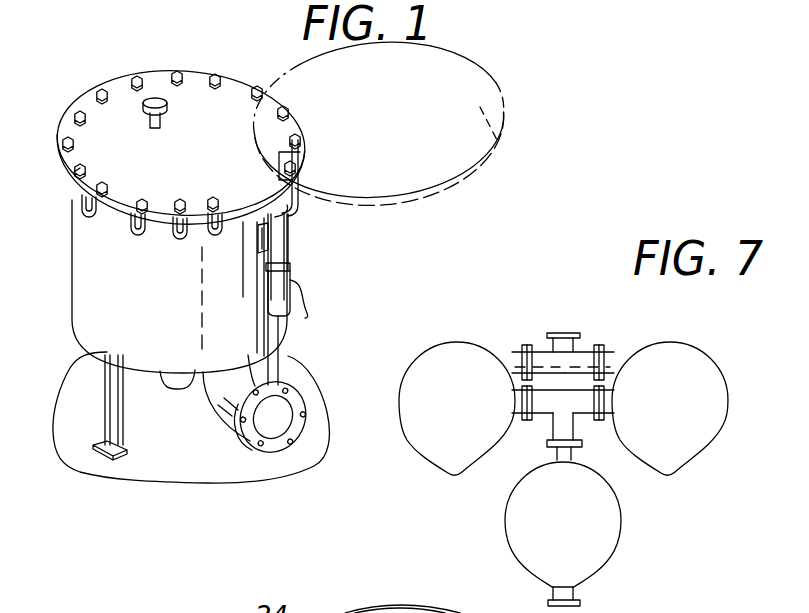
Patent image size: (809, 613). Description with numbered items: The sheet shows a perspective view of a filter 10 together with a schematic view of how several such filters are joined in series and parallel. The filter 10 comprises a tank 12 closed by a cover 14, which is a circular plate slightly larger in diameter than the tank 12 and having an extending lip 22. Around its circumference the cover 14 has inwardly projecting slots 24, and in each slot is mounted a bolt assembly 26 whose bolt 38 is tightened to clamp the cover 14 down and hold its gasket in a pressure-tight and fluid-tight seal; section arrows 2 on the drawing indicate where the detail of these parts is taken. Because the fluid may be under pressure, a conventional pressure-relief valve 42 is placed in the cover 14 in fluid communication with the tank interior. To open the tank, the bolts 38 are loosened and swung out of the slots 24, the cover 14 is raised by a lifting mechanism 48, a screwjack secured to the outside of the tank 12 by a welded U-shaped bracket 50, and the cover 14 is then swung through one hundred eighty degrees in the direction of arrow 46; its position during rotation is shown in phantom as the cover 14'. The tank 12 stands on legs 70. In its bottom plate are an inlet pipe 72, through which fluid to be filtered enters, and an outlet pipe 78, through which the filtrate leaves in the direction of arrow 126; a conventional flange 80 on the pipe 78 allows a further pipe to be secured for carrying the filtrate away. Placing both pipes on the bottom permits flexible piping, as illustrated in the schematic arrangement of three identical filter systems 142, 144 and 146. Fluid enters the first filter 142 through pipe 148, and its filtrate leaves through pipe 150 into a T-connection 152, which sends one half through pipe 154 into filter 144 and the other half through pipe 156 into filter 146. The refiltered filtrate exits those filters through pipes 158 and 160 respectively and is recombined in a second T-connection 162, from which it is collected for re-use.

In FIG. 1, the section view direction arrows 2 is at (92, 43).
In FIG. 1, the filter 10 is at (322, 316).
In FIG. 1, the tank 12 is at (188, 329).
In FIG. 1, the cover 14 is at (181, 148).
In FIG. 1, the cover during rotation 14' is at (402, 123).
In FIG. 1, the extending lip 22 is at (272, 213).
In FIG. 1, the inwardly projecting slots 24 is at (177, 71).
In FIG. 1, the bolt assembly 26 is at (180, 252).
In FIG. 1, the bolt 38 is at (88, 170).
In FIG. 1, the pressure-relief valve 42 is at (167, 112).
In FIG. 1, the arrow 46 is at (323, 172).
In FIG. 1, the lifting mechanism 48 is at (296, 247).
In FIG. 1, the U-shaped bracket 50 is at (260, 246).
In FIG. 1, the legs 70 is at (128, 425).
In FIG. 1, the pipe 72 is at (177, 380).
In FIG. 1, the pipe 78 is at (246, 399).
In FIG. 1, the flange 80 is at (287, 384).
In FIG. 1, the arrow 126 is at (275, 420).
In FIG. 7, the filter system 142 is at (590, 518).
In FIG. 7, the filter system 144 is at (482, 403).
In FIG. 7, the filter system 146 is at (698, 403).
In FIG. 7, the pipe 148 is at (575, 591).
In FIG. 7, the pipe 150 is at (557, 460).
In FIG. 7, the T-connection 152 is at (568, 422).
In FIG. 7, the pipe 154 is at (517, 409).
In FIG. 7, the pipe 156 is at (607, 405).
In FIG. 7, the pipe 158 is at (508, 352).
In FIG. 7, the pipe 160 is at (617, 352).
In FIG. 7, the T-connection 162 is at (566, 334).